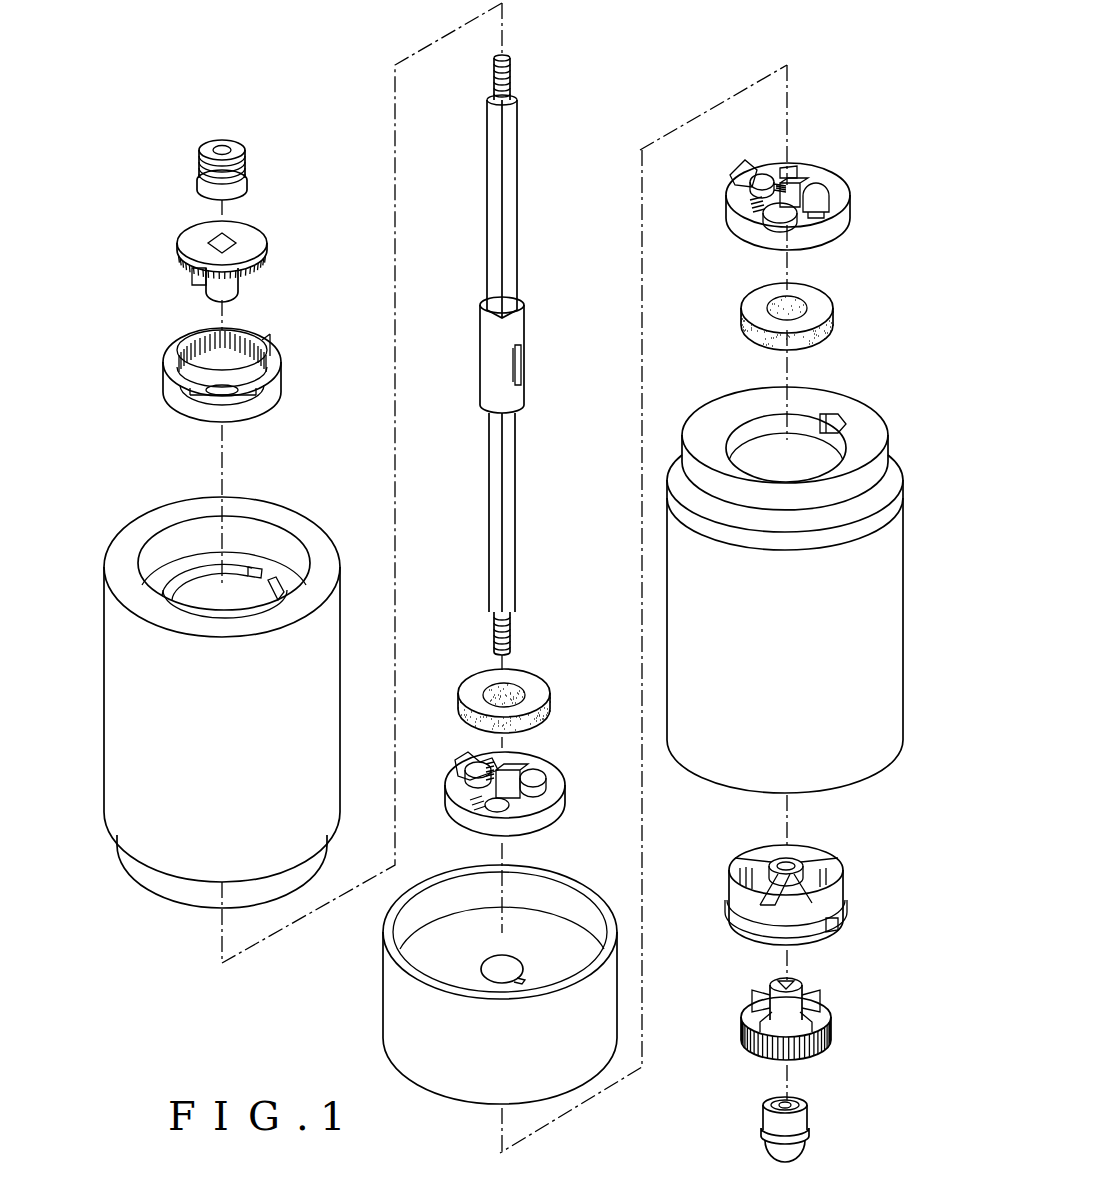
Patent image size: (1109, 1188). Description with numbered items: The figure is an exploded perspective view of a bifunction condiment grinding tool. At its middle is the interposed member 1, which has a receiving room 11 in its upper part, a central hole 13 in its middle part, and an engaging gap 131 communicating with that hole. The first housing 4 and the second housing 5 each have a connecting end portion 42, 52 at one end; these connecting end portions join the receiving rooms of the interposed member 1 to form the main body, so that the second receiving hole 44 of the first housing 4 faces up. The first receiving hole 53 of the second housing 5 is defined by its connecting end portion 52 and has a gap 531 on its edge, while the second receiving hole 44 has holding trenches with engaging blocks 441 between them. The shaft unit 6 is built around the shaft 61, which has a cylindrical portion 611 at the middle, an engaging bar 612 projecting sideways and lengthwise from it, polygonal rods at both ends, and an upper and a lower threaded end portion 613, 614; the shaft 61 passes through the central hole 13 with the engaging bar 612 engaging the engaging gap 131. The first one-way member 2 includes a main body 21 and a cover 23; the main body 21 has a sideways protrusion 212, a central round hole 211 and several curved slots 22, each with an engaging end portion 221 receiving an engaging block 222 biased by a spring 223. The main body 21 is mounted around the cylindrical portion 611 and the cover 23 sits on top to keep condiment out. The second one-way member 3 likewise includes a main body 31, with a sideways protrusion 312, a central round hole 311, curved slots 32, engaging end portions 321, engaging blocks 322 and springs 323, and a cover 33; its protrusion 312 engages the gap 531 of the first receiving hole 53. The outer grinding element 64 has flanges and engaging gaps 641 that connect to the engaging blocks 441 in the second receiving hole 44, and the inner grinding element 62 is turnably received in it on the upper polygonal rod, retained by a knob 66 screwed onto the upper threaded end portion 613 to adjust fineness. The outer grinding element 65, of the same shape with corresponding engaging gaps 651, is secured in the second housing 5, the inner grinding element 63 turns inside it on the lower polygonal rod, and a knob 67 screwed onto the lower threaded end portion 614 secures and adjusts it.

The interposed member 1 is at (459, 990).
The receiving room 11 is at (530, 905).
The central hole 13 is at (490, 963).
The engaging gap 131 is at (523, 985).
The first one-way member 2 is at (481, 766).
The main body 21 is at (553, 795).
The central round hole 211 is at (517, 777).
The sideways protrusion 212 is at (455, 762).
The curved slots 22 is at (487, 760).
The engaging end portion 221 is at (450, 798).
The engaging block 222 is at (467, 765).
The spring 223 is at (470, 810).
The cover 23 is at (530, 682).
The second one-way member 3 is at (800, 175).
The main body 31 is at (827, 220).
The central round hole 311 is at (800, 197).
The sideways protrusion 312 is at (742, 163).
The curved slots 32 is at (770, 190).
The engaging end portion 321 is at (753, 203).
The engaging block 322 is at (740, 173).
The spring 323 is at (753, 222).
The cover 33 is at (820, 317).
The first housing 4 is at (223, 704).
The connecting end portion 42 is at (172, 888).
The second receiving hole 44 is at (232, 597).
The engaging blocks 441 is at (270, 583).
The second housing 5 is at (808, 559).
The connecting end portion 52 is at (867, 448).
The first receiving hole 53 is at (758, 440).
The gap 531 is at (828, 414).
The shaft assembly 6 is at (518, 340).
The shaft 61 is at (508, 175).
The cylindrical portion 611 is at (497, 377).
The engaging bar 612 is at (525, 370).
The upper threaded end portion 613 is at (515, 80).
The lower threaded end portion 614 is at (490, 632).
The inner grinding element 62 is at (252, 237).
The inner grinding element 63 is at (822, 1017).
The outer grinding element 64 is at (260, 373).
The engaging gaps 641 is at (262, 338).
The outer grinding element 65 is at (826, 889).
The tab of spoked wheel 651 is at (827, 937).
The knob 66 is at (252, 163).
The knob 67 is at (807, 1142).